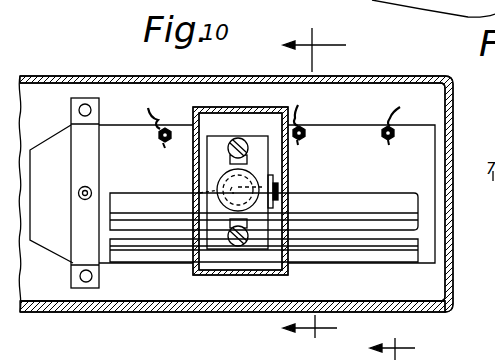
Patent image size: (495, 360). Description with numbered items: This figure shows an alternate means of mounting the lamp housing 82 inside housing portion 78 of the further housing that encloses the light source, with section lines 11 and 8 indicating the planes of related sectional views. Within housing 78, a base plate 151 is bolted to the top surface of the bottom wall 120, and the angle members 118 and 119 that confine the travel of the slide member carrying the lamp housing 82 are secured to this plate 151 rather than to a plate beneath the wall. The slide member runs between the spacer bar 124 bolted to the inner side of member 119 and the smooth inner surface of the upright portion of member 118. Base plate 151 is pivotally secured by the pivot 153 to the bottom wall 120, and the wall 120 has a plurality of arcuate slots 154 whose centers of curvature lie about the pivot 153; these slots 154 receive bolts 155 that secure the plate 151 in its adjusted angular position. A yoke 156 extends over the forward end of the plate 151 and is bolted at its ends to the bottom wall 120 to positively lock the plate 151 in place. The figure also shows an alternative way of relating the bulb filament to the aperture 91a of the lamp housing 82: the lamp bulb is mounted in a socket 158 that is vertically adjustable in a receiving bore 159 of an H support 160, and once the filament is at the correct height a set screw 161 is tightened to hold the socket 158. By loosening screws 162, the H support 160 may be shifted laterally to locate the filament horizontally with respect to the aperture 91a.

The housing portion 78 is at (432, 309).
The bottom wall 120 is at (142, 295).
The yoke 156 is at (78, 163).
The pivot 153 is at (79, 199).
The base plate 151 is at (357, 125).
The arcuate slots 154 is at (272, 117).
The bolts 155 is at (366, 141).
The lamp housing 82 is at (259, 107).
The H support 160 is at (264, 222).
The screws 162 is at (237, 138).
The receiving bore 159 is at (228, 207).
The socket 158 is at (232, 188).
The aperture 91a is at (197, 193).
The set screw 161 is at (284, 188).
The angle member 118 is at (379, 194).
The spacer bar 124 is at (420, 224).
The angle member 119 is at (357, 258).
The section line 11- 11 is at (314, 184).
The section line 8- 8 is at (392, 341).